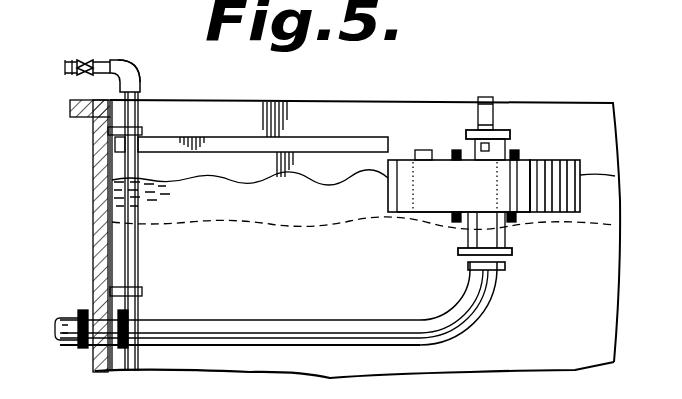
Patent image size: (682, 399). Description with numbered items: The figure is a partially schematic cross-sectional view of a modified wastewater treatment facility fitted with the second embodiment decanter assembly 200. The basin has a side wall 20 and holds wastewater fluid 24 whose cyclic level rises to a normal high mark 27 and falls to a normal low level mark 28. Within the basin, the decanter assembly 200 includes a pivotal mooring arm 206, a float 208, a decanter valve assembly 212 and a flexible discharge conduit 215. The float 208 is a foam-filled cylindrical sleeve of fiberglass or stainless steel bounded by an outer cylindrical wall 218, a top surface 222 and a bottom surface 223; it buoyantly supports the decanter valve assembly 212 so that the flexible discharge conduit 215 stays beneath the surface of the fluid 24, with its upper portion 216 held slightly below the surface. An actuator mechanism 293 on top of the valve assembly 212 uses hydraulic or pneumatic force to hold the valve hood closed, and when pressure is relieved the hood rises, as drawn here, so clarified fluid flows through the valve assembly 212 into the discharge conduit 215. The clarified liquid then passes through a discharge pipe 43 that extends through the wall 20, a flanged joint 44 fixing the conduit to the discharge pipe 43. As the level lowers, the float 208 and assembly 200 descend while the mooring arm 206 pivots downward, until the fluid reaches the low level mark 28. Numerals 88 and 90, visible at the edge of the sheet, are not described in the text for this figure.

The decanter assembly 200 is at (299, 89).
The side wall 20 is at (93, 259).
The discharge pipe 43 is at (68, 313).
The flanged joint 44 is at (133, 298).
The flexible discharge conduit 215 is at (274, 318).
The upper portion 216 is at (497, 276).
The outer cylindrical wall 218 is at (388, 192).
The float 208 is at (548, 162).
The top surface 222 is at (530, 160).
The decanter valve assembly 212 is at (514, 111).
The actuator mechanism 293 is at (478, 100).
The mooring arm 206 is at (256, 152).
The normal high mark 27 is at (302, 180).
The normal low level mark 28 is at (222, 222).
The wastewater fluid 24 is at (287, 260).
The bottom surface 223 is at (425, 214).
The adjacent figure numeral 88 is at (575, 6).
The adjacent figure numeral 90 is at (676, 8).